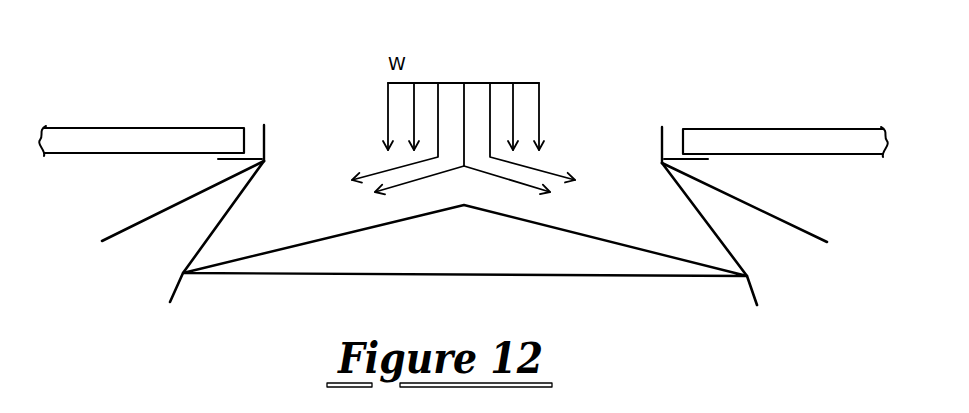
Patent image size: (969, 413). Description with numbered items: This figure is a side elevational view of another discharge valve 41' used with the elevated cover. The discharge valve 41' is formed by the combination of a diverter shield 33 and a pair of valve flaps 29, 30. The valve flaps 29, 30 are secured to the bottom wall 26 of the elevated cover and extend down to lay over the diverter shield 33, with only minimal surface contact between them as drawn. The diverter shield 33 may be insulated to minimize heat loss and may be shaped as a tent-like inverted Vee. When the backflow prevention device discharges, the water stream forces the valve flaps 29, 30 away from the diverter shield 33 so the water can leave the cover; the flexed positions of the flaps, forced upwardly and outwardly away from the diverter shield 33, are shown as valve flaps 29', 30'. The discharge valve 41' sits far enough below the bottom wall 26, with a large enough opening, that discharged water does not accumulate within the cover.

The bottom wall 26 is at (93, 138).
The discharge valve 41' is at (463, 100).
The valve flap 30' is at (146, 201).
The valve flap 30 is at (173, 233).
The diverter shield 33 is at (380, 230).
The valve flap 29 is at (749, 234).
The valve flap 29' is at (770, 202).